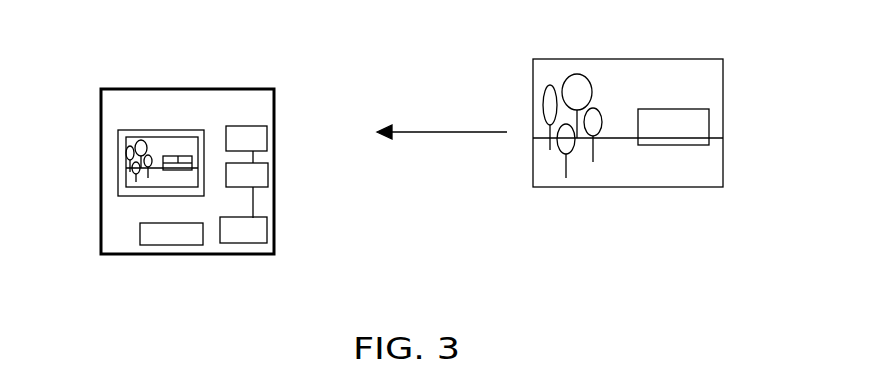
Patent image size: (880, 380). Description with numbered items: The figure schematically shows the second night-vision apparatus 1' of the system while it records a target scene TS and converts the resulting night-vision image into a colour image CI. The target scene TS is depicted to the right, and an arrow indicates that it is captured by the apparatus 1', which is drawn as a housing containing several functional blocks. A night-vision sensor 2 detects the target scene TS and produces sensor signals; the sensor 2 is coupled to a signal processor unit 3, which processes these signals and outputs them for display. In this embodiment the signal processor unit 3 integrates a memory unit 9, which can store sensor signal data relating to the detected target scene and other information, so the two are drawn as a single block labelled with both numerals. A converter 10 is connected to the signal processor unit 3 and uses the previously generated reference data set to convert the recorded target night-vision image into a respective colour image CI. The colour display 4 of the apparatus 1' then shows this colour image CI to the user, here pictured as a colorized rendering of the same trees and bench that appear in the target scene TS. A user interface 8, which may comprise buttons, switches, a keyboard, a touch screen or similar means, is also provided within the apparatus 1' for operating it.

The night-vision apparatus 1' is at (173, 147).
The night-vision sensor 2 is at (239, 129).
The colour image CI is at (137, 173).
The colour display 4 is at (130, 207).
The signal processor unit 3 is at (281, 198).
The memory unit 9 is at (264, 187).
The converter 10 is at (249, 233).
The user interface 8 is at (188, 245).
The target scene TS is at (666, 196).